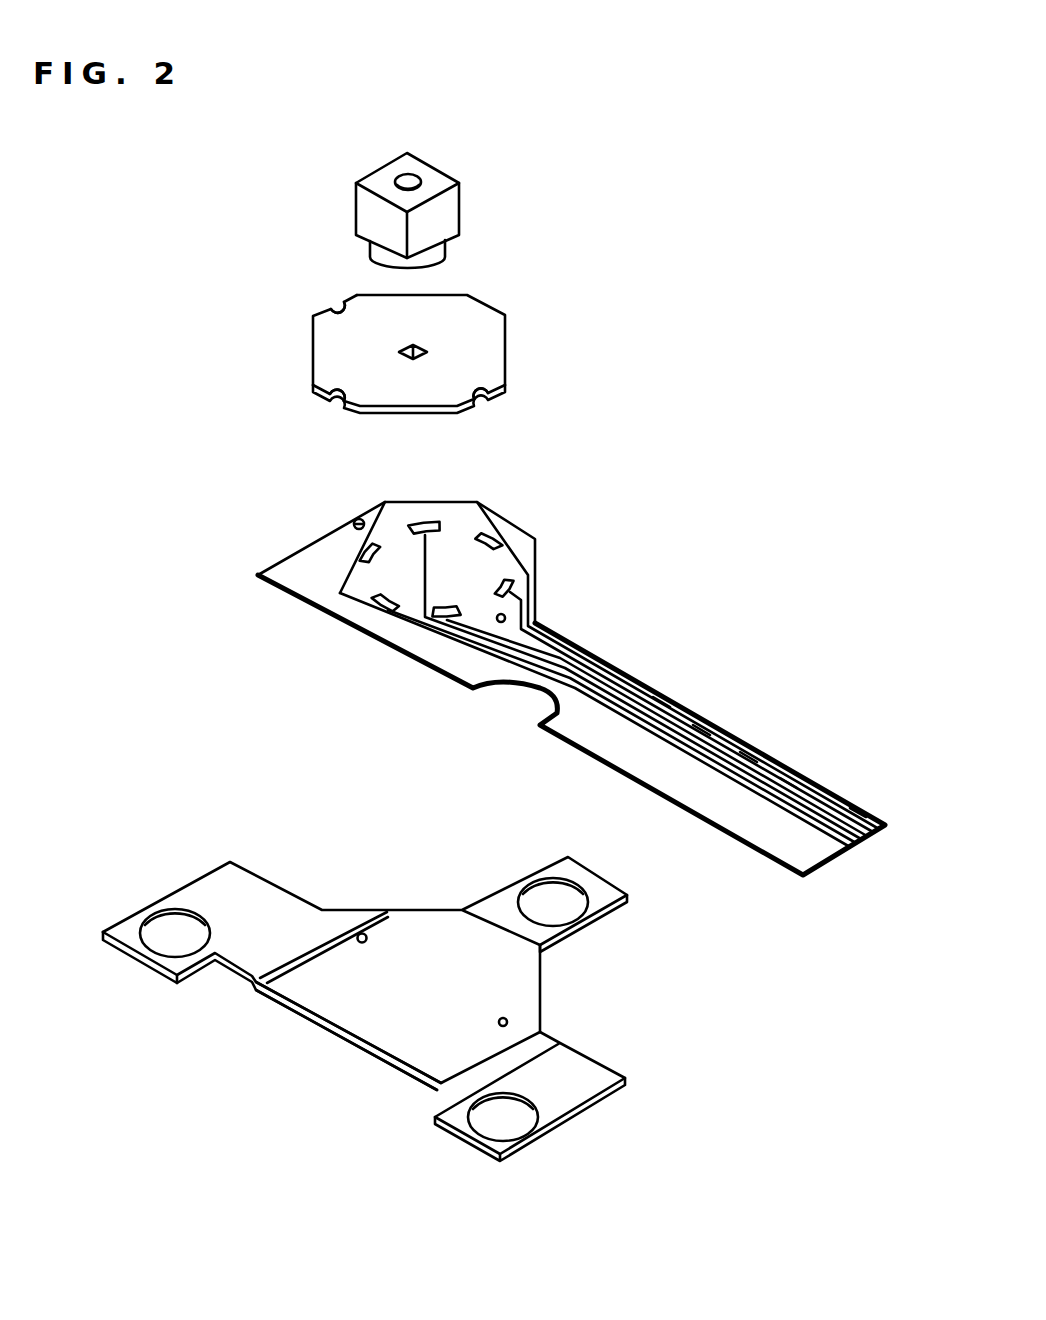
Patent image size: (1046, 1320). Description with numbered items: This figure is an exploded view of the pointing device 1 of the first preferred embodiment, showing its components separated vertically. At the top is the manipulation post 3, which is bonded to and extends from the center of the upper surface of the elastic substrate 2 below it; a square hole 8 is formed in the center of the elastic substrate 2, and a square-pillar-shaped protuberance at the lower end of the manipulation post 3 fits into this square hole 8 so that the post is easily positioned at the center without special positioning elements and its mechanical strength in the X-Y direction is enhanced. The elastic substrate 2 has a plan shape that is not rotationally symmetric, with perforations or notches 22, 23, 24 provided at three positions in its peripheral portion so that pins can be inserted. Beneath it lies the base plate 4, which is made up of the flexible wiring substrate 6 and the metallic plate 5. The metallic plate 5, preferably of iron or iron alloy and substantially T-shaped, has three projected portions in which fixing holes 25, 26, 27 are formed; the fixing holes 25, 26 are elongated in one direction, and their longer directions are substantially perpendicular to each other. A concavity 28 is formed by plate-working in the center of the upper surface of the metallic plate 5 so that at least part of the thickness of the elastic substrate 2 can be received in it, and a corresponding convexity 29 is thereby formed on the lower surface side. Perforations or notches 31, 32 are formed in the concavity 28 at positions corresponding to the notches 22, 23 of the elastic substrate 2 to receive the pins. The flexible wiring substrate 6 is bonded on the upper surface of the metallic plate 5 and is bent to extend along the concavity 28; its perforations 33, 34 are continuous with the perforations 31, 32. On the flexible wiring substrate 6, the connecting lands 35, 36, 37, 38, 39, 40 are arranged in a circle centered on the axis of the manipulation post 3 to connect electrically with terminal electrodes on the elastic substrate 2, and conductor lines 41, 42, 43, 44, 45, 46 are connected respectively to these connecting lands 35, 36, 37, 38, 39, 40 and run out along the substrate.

The pointing device 1 is at (58, 234).
The elastic substrate 2 is at (424, 337).
The manipulation post 3 is at (503, 209).
The base plate 4 is at (148, 778).
The metallic plate 5 is at (369, 957).
The flexible wiring substrate 6 is at (535, 660).
The square hole 8 is at (530, 265).
The notch 22 is at (342, 305).
The notch 23 is at (540, 420).
The notch 24 is at (333, 398).
The fixing hole 25 is at (148, 900).
The fixing hole 26 is at (553, 876).
The fixing hole 27 is at (612, 1147).
The concavity 28 is at (412, 950).
The convexity 29 is at (310, 1083).
The perforation 31 is at (359, 933).
The perforation 32 is at (578, 1008).
The perforation 33 is at (357, 519).
The perforation 34 is at (592, 592).
The connecting land 35 is at (425, 520).
The connecting land 36 is at (492, 535).
The connecting land 37 is at (510, 577).
The connecting land 38 is at (425, 713).
The connecting land 39 is at (325, 650).
The connecting land 40 is at (358, 547).
The conductor line 41 is at (647, 635).
The conductor line 42 is at (692, 670).
The conductor line 43 is at (737, 693).
The conductor line 44 is at (782, 717).
The conductor line 45 is at (823, 752).
The conductor line 46 is at (885, 788).